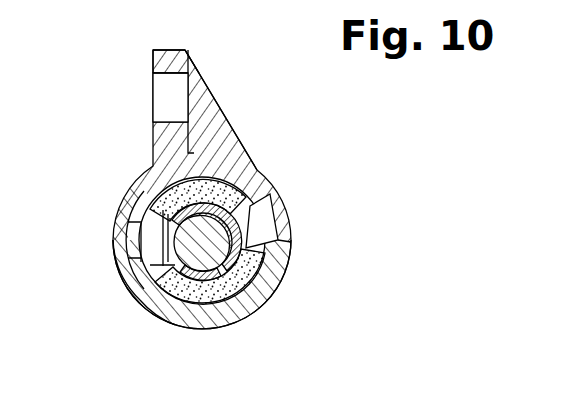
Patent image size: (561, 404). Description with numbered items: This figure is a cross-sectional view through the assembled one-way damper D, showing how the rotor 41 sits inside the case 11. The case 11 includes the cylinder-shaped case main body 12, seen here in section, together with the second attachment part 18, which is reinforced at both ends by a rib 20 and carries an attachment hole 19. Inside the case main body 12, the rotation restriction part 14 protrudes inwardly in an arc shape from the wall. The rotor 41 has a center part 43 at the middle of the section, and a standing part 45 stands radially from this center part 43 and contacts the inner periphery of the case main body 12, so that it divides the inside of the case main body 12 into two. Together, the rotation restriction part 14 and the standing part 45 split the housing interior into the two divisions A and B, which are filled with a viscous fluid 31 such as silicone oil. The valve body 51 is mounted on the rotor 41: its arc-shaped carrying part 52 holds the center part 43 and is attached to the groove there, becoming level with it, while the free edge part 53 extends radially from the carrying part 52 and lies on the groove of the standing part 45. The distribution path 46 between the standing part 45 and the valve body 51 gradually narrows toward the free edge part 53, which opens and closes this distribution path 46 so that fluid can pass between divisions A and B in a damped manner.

The case 11 is at (234, 109).
The case main body 12 is at (227, 168).
The rotation restriction part 14 is at (253, 227).
The second attachment part 18 is at (168, 62).
The attachment hole 19 is at (160, 95).
The rib 20 is at (198, 92).
The viscous fluid 31 is at (199, 307).
The rotor 41 is at (228, 269).
The center part 43 is at (237, 277).
The standing part 45 is at (145, 225).
The distribution path 46 is at (165, 248).
The valve body 51 is at (283, 256).
The carrying part 52 is at (232, 278).
The free edge part 53 is at (157, 192).
The division A is at (213, 188).
The division B is at (163, 315).
The one-way damper D is at (126, 298).